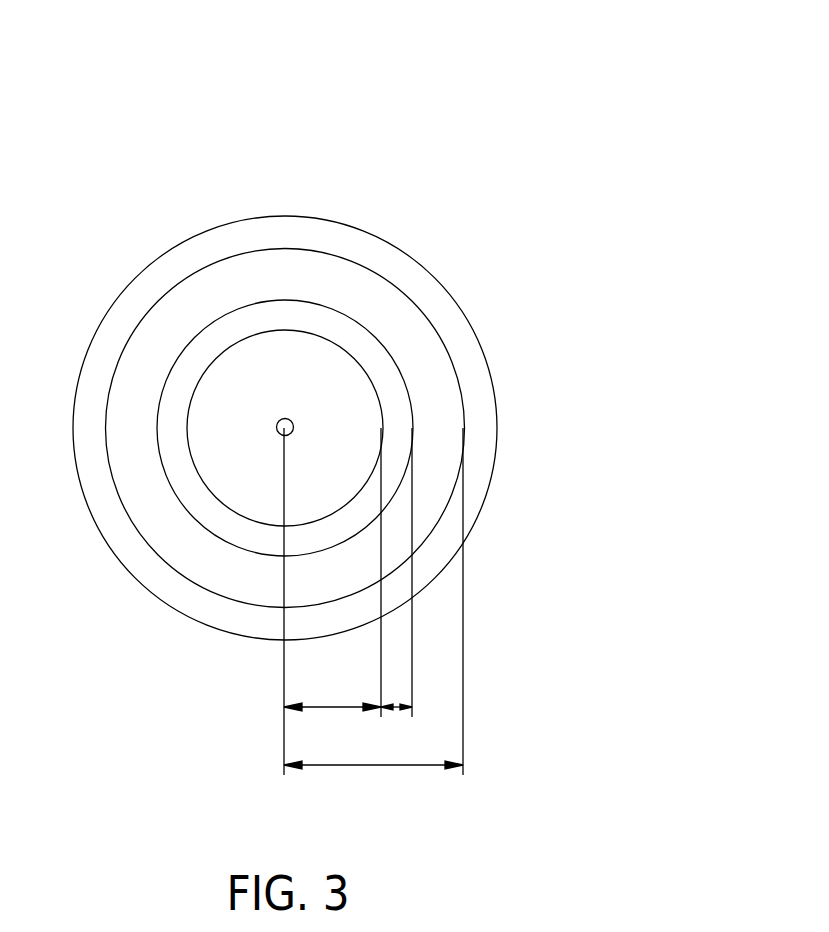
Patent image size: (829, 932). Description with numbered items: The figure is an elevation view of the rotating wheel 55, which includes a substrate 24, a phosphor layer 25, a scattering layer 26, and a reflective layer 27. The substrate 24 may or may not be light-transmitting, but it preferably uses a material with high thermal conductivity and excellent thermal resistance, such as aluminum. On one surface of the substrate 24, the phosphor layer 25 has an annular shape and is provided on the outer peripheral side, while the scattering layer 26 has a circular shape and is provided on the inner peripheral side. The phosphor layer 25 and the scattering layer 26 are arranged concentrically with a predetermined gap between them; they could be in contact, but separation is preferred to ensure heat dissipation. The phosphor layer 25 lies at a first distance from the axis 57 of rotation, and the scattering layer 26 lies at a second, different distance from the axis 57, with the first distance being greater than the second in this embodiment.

The rotating wheel 55 is at (332, 130).
The axis of rotation 57 is at (283, 419).
The reflective layer 27 is at (152, 282).
The substrate 24 is at (285, 428).
The scattering layer 26 is at (318, 362).
The phosphor layer 25 is at (407, 332).